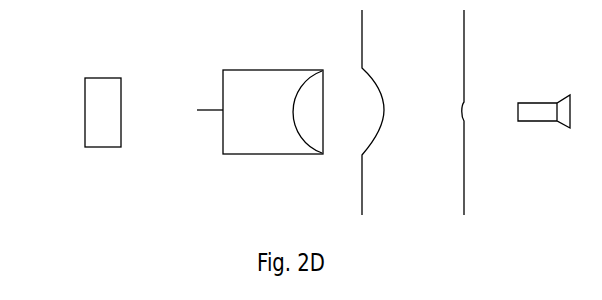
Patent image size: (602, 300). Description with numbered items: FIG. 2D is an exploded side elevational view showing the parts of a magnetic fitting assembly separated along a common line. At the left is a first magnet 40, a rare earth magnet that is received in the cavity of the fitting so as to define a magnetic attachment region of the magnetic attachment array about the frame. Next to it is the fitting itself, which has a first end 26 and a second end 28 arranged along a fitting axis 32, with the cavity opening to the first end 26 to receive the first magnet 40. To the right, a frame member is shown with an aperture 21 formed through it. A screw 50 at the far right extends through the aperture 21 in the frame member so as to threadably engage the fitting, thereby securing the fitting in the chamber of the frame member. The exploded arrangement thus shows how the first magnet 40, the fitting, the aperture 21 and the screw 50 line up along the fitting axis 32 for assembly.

The first magnet 40 is at (77, 88).
The first end 26 is at (223, 71).
The fitting axis 32 is at (207, 110).
The second end 28 is at (321, 71).
The aperture 21 is at (465, 104).
The screw 50 is at (549, 103).